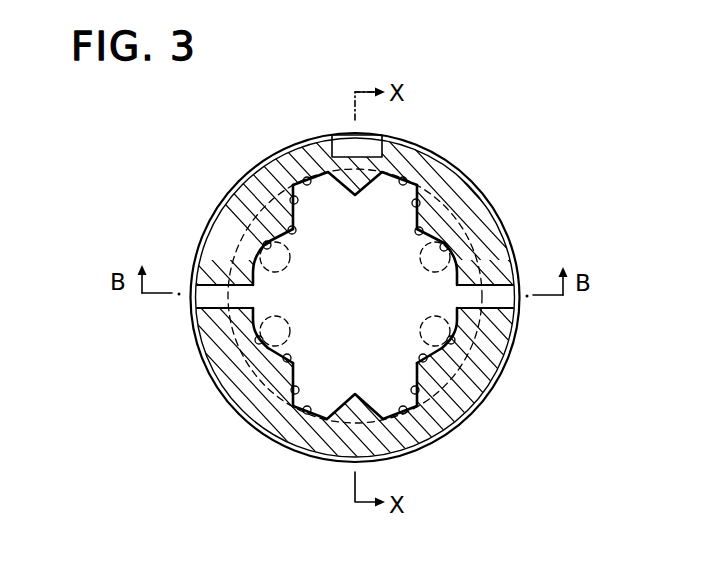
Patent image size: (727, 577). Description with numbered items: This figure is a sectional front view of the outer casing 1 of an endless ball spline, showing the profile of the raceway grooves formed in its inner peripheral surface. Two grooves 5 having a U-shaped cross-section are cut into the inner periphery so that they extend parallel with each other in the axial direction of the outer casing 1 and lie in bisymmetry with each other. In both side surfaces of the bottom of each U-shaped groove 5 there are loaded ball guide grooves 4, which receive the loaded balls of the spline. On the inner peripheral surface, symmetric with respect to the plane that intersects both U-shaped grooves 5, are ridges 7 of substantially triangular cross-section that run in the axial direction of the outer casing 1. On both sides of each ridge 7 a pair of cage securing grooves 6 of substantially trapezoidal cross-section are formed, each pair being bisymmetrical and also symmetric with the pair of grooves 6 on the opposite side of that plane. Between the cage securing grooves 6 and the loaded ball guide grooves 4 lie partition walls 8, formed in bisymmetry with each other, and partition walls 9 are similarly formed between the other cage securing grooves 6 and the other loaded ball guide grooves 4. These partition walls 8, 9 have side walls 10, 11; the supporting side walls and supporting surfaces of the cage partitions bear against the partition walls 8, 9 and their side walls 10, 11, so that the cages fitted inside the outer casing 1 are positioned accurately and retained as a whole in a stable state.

The outer casing 1 is at (521, 263).
The loaded ball guide grooves 4 is at (258, 246).
The grooves having a U-shaped cross-section 5 is at (236, 304).
The cage securing grooves 6 is at (310, 178).
The ridges 7 is at (344, 158).
The partition walls 8 is at (284, 200).
The partition walls 9 is at (287, 378).
The side walls 10 is at (290, 192).
The side walls 11 is at (264, 412).